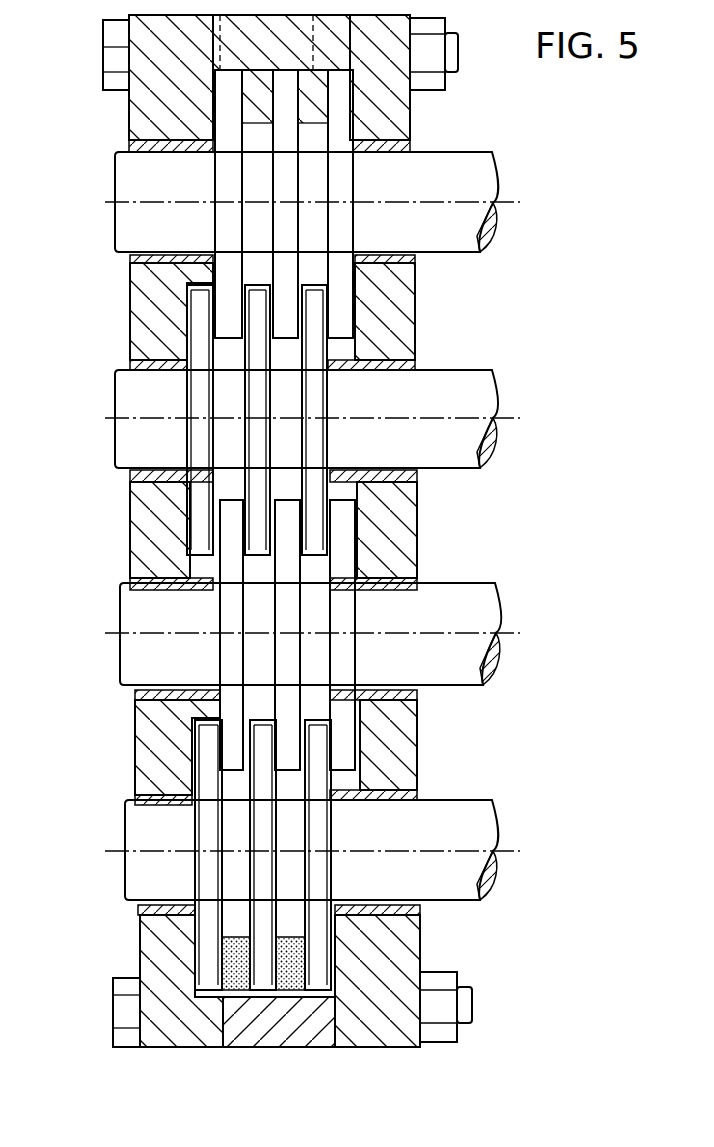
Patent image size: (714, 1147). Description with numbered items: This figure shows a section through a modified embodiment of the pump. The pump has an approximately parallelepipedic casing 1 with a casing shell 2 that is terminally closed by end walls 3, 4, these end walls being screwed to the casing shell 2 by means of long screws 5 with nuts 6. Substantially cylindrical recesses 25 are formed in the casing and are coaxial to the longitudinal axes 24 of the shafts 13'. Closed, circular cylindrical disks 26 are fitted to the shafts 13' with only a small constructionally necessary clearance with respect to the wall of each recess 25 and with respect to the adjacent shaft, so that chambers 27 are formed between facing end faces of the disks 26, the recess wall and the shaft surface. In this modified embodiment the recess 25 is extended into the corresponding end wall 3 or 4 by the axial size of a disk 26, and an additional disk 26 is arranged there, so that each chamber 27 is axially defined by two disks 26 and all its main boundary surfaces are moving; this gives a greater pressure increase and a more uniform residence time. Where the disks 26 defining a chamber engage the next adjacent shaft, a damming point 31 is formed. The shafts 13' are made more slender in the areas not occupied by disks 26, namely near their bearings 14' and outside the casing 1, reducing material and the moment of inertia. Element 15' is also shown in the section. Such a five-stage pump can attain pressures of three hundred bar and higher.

The casing 1 is at (202, 1054).
The casing shell 2 is at (266, 1028).
The end wall 3 is at (170, 1032).
The end wall 4 is at (385, 1022).
The long screws 5 is at (130, 1008).
The nuts 6 is at (440, 1007).
The shafts 13' is at (343, 514).
The bearings 14' is at (130, 410).
The housing block 15' is at (354, 407).
The longitudinal axes 24 is at (463, 416).
The recesses 25 is at (185, 332).
The disks 26 is at (232, 567).
The chambers 27 is at (294, 968).
The damming point 31 is at (287, 498).